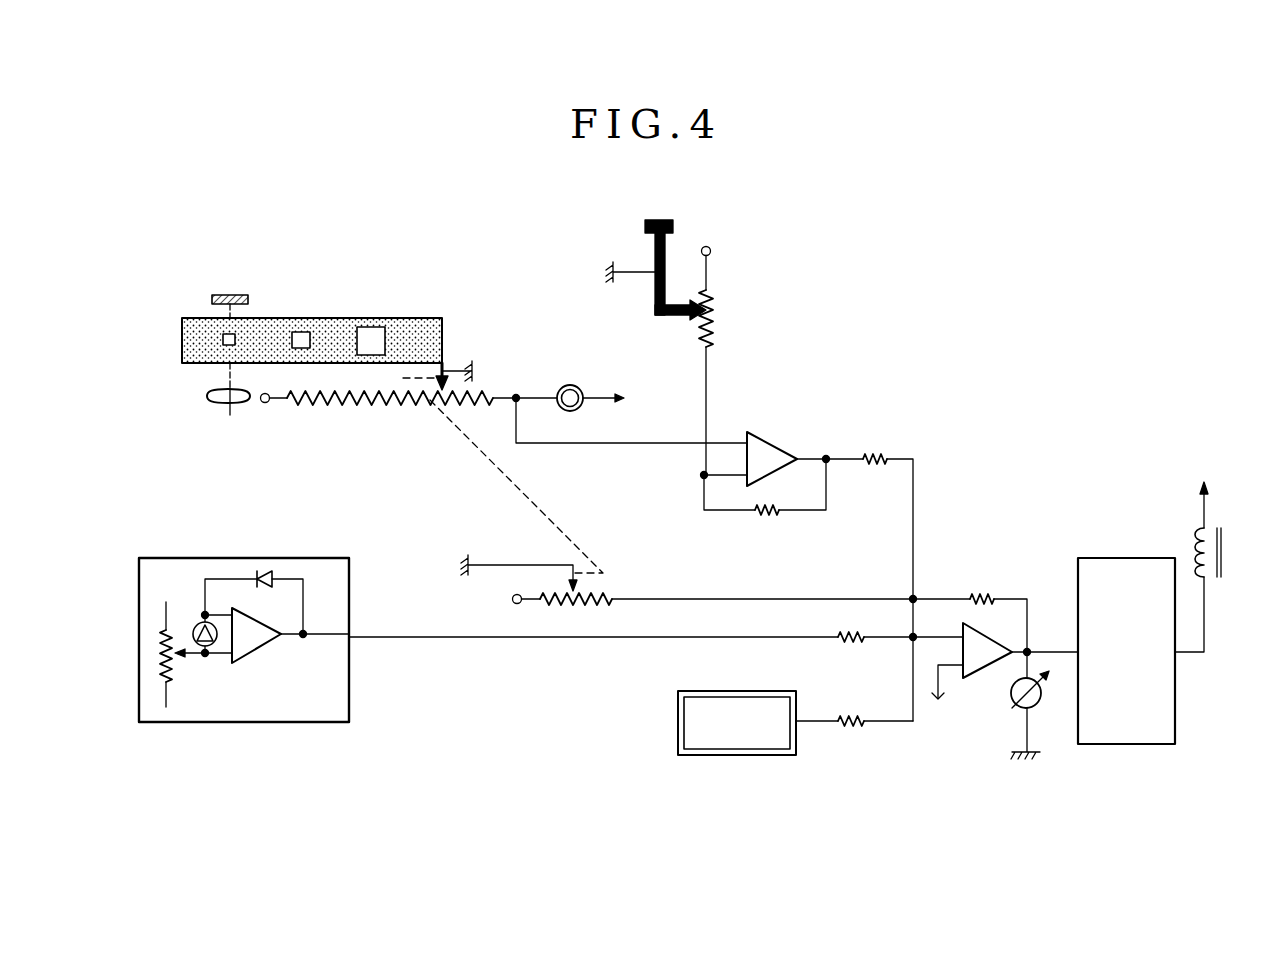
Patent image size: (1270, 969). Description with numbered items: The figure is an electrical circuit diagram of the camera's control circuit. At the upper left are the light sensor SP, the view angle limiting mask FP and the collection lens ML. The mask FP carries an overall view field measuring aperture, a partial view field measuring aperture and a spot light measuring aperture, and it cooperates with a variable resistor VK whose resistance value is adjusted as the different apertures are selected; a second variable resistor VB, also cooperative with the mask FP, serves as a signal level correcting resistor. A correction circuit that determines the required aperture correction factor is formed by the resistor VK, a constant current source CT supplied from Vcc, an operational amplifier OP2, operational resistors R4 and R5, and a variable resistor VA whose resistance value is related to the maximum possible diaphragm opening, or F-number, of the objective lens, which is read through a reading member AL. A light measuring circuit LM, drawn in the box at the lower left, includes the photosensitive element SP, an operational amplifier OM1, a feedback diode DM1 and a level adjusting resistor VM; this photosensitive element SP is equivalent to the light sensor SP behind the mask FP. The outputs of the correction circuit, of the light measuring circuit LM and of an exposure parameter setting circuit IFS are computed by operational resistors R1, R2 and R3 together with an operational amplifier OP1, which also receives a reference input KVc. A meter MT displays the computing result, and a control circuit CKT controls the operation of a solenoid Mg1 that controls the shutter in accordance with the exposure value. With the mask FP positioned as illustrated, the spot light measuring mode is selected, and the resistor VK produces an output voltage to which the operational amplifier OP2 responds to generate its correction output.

The view angle limiting mask FP is at (402, 318).
The light sensor SP is at (232, 295).
The collection lens ML is at (218, 406).
The variable resistor VK is at (372, 408).
The constant current source CT is at (570, 384).
The supply voltage Vcc is at (900, 456).
The reading member AL is at (662, 220).
The variable resistor VA is at (716, 328).
The operational amplifier OP2 is at (772, 450).
The operational resistor R4 is at (768, 520).
The operational resistor R5 is at (872, 470).
The operational resistor R3 is at (979, 592).
The operational resistor R1 is at (851, 647).
The operational resistor R2 is at (853, 731).
The exposure parameter setting circuit IFS is at (737, 723).
The variable resistor VB is at (568, 606).
The operational amplifier OP1 is at (980, 664).
The reference voltage KVc is at (943, 697).
The meter MT is at (1043, 697).
The control circuit CKT is at (1126, 651).
The solenoid Mg1 is at (1223, 558).
The light measuring circuit LM is at (139, 645).
The level adjusting resistor VM is at (160, 668).
The feedback diode DM1 is at (268, 573).
The operational amplifier OM1 is at (262, 638).